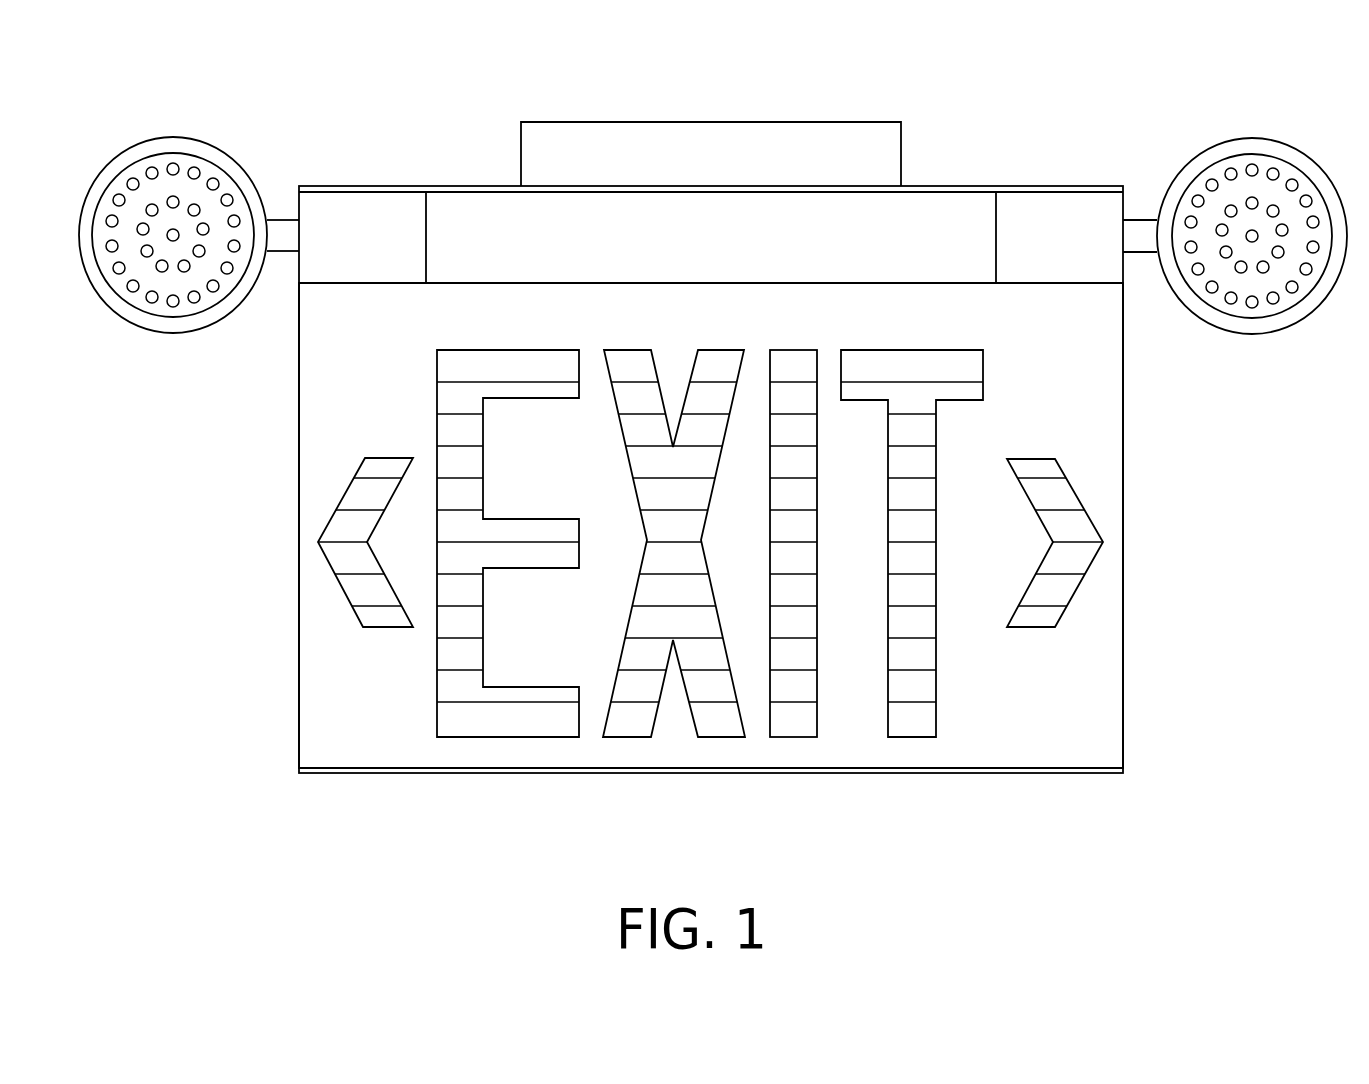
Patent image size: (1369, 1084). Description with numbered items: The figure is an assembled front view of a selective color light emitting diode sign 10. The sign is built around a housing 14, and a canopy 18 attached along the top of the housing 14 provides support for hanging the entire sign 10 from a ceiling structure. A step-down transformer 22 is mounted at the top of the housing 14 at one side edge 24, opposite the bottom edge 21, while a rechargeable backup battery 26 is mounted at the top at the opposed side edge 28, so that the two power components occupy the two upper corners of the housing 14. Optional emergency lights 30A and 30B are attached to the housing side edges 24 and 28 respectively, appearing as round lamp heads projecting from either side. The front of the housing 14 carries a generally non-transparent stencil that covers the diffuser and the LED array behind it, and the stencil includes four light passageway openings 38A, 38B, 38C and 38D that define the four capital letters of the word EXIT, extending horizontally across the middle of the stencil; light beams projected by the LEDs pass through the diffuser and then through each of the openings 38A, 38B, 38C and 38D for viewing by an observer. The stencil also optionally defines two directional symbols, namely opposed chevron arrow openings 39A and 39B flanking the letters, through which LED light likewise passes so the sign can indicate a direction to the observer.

The selective color light emitting diode sign 10 is at (702, 459).
The housing 14 is at (752, 458).
The canopy 18 is at (725, 152).
The bottom edge 21 is at (1055, 769).
The step-down transformer 22 is at (362, 227).
The side edge 24 is at (710, 573).
The rechargeable backup battery 26 is at (1055, 233).
The side edge 28 is at (948, 186).
The emergency light 30A is at (143, 137).
The emergency light 30B is at (1223, 145).
The light passageway opening 38A is at (492, 722).
The light passageway opening 38B is at (630, 720).
The light passageway opening 38C is at (792, 720).
The light passageway opening 38D is at (912, 720).
The chevron arrow opening 39A is at (343, 557).
The chevron arrow opening 39B is at (1053, 590).